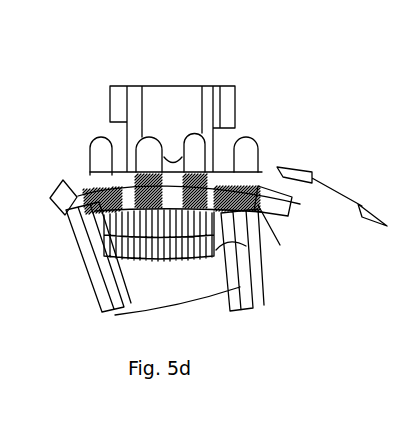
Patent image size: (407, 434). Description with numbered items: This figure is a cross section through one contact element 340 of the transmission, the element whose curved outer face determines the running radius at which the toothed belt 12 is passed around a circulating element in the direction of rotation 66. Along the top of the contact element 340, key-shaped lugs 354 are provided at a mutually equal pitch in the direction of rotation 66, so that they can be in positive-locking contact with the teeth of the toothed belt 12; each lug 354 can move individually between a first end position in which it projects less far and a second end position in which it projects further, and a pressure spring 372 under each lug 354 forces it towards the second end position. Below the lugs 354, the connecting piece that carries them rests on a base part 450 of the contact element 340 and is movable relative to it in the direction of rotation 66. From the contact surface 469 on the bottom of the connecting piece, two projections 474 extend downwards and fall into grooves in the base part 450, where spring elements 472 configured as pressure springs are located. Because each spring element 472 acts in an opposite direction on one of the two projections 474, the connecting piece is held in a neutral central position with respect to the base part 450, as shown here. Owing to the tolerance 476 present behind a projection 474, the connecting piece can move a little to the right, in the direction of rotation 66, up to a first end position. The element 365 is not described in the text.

The toothed belt 12 is at (112, 98).
The contact element 340 is at (280, 73).
The key-shaped lug 354 is at (95, 146).
The fastener 365 is at (66, 178).
The direction of rotation 66 is at (331, 190).
The pressure spring 372 is at (258, 207).
The projection 474 is at (212, 246).
The tolerance 476 is at (222, 250).
The contact surface 469 is at (73, 214).
The base part 450 is at (92, 265).
The spring element 472 is at (138, 257).